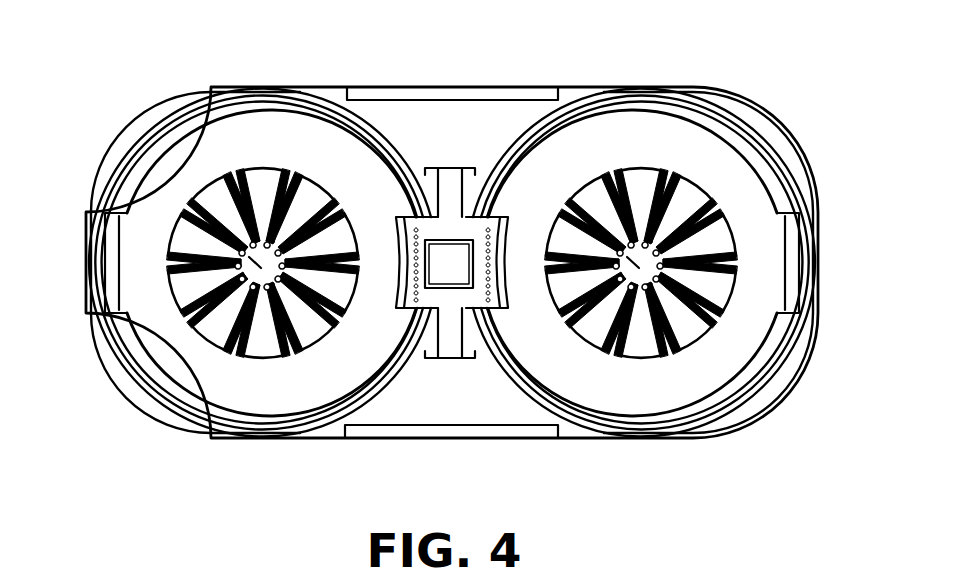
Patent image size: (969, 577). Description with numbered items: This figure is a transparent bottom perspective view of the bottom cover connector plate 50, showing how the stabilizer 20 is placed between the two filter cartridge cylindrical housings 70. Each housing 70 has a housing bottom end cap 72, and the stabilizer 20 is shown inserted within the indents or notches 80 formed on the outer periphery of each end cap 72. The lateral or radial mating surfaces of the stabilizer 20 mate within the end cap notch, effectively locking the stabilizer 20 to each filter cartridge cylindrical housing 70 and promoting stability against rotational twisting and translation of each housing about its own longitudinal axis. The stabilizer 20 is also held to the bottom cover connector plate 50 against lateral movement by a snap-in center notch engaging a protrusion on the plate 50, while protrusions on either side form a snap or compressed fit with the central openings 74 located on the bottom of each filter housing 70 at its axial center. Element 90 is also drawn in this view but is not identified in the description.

The stabilizer 20 is at (449, 188).
The bottom cover connector plate 50 is at (385, 87).
The filter cartridge cylindrical housing 70 is at (187, 124).
The housing bottom end cap 72 is at (232, 143).
The central opening 74 is at (246, 247).
The notch 80 is at (403, 263).
The bottom base plate 90 is at (451, 400).